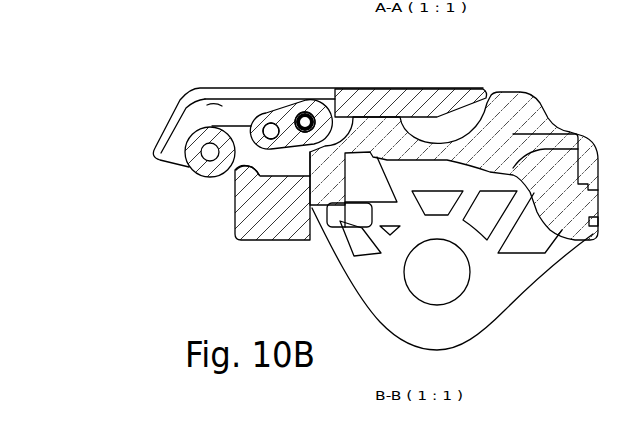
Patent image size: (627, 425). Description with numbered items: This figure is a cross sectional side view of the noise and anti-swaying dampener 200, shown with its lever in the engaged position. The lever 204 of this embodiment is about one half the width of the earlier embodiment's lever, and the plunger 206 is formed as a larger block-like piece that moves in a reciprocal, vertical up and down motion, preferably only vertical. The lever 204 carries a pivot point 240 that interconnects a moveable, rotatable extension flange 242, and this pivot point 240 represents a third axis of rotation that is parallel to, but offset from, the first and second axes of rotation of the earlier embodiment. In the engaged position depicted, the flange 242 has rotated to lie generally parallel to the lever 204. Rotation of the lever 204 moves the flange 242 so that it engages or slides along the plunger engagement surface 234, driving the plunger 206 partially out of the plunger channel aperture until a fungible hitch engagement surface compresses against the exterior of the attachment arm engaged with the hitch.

The noise dampener 200 is at (335, 176).
The lever 204 is at (453, 88).
The plunger 206 is at (263, 240).
The plunger engagement surface 234 is at (245, 168).
The pivot point 240 is at (268, 120).
The extension flange 242 is at (281, 108).